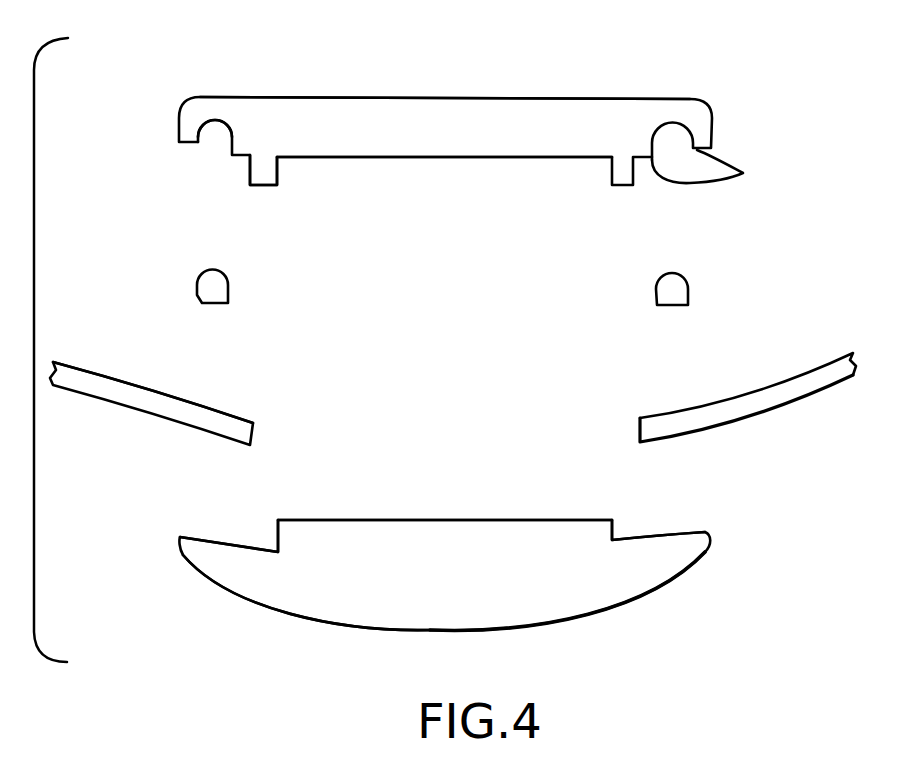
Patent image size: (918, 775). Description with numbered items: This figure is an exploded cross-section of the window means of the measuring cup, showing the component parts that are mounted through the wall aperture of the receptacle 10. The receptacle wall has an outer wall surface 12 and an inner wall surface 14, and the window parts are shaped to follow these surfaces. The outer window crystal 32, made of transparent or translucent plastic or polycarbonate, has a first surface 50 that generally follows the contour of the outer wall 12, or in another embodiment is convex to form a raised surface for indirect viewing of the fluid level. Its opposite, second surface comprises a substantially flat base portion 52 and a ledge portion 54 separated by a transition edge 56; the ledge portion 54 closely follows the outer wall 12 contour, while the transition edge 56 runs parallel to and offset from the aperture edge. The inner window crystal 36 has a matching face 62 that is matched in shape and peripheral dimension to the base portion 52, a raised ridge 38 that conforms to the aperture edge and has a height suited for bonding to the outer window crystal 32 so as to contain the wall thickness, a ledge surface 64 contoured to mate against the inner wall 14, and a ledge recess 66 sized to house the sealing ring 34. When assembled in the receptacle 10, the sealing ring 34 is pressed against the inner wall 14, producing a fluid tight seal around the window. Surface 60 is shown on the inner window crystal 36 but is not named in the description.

The receptacle 10 is at (790, 393).
The outer wall surface 12 is at (127, 417).
The inner wall surface 14 is at (122, 388).
The outer window crystal 32 is at (540, 595).
The sealing ring 34 is at (232, 287).
The inner window crystal 36 is at (563, 118).
The raised ridge 38 is at (277, 185).
The first surface 50 is at (347, 622).
The base portion 52 is at (500, 520).
The ledge portion 54 is at (658, 538).
The transition edge 56 is at (278, 537).
The top surface of cover 60 is at (458, 98).
The matching face 62 is at (472, 158).
The ledge surface 64 is at (726, 172).
The ledge recess 66 is at (203, 134).